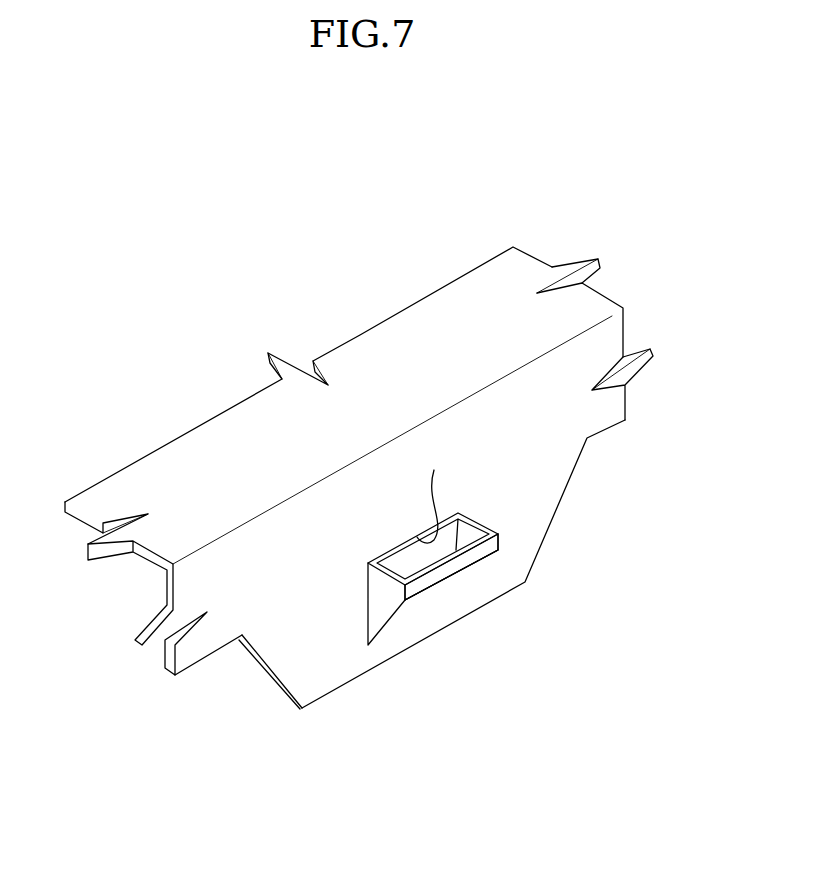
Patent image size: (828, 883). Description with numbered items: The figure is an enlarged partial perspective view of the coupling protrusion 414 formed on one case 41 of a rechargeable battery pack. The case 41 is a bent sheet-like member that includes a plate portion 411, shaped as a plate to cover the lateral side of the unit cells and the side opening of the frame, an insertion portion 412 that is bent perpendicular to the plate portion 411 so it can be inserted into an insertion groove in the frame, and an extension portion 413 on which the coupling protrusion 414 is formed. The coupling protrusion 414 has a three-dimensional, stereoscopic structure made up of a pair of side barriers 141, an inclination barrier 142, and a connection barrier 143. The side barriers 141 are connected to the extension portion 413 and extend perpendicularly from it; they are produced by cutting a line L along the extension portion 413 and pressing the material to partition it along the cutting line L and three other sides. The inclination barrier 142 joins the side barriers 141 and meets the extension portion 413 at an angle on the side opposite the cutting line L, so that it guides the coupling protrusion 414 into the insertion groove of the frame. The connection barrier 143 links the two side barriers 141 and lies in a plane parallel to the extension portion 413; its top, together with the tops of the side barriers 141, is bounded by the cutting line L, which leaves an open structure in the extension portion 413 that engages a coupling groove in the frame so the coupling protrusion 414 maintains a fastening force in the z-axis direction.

The case 41 is at (235, 268).
The plate portion 411 is at (448, 310).
The insertion portion 412 is at (577, 417).
The extension portion 413 is at (292, 647).
The coupling protrusion 414 is at (493, 565).
The side barriers 141 is at (382, 605).
The inclination barrier 142 is at (418, 608).
The connection barrier 143 is at (442, 572).
The cutting line L is at (427, 492).